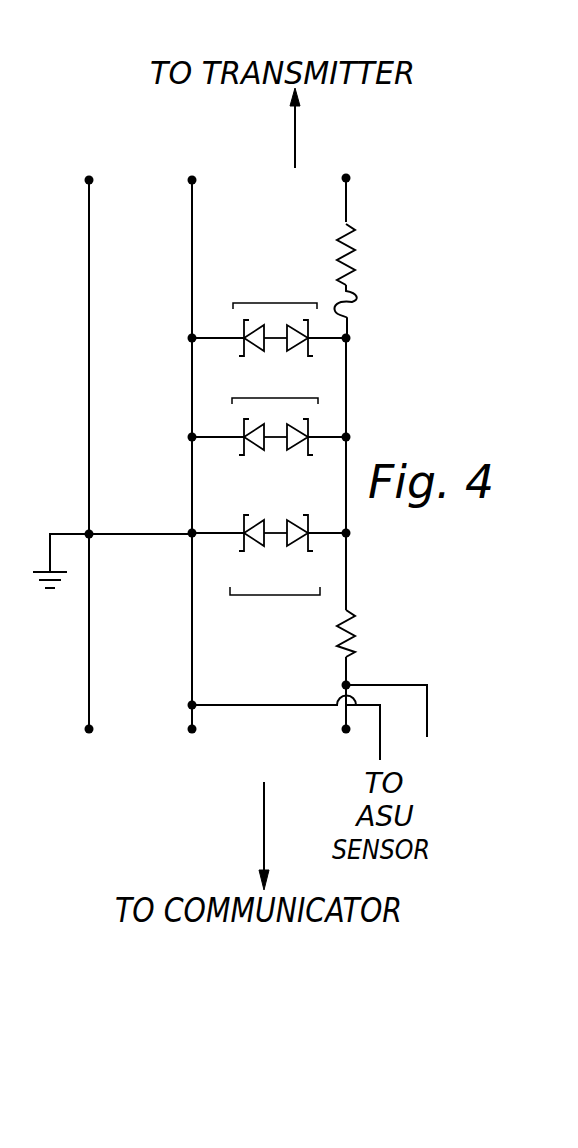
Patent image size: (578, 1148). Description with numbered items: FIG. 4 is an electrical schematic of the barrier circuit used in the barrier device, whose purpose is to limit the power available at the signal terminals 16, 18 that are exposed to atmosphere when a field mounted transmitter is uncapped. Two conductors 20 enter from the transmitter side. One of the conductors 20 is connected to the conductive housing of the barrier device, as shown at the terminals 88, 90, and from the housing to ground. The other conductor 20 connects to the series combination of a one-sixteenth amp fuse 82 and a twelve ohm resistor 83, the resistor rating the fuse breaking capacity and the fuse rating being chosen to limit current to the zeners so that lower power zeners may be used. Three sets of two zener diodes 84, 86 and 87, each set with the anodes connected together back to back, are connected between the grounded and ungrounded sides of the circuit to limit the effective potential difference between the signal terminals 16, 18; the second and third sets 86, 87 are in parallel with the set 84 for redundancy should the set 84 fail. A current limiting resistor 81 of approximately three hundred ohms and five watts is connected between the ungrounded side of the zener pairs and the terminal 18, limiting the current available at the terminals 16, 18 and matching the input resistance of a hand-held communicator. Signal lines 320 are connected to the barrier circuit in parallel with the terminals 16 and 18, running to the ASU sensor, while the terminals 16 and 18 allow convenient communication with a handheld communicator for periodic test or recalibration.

The signal terminal 16 is at (192, 733).
The signal terminal 18 is at (346, 733).
The conductors 20 is at (194, 182).
The current limiting resistor 81 is at (354, 618).
The fuse 82 is at (356, 300).
The resistor 83 is at (355, 234).
The zener diode set 84 is at (250, 398).
The zener diode set 86 is at (240, 597).
The zener diode set 87 is at (300, 301).
The terminal 88 is at (89, 178).
The terminal 90 is at (89, 733).
The signal lines 320 is at (434, 722).